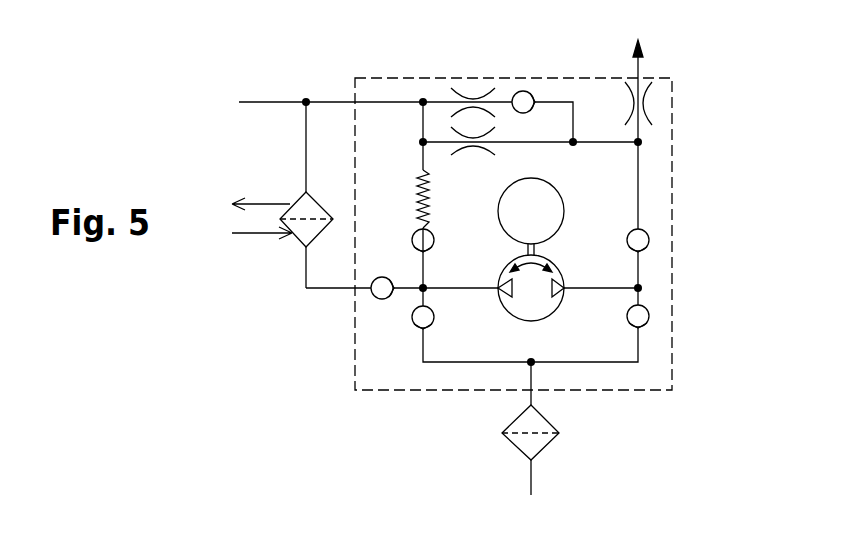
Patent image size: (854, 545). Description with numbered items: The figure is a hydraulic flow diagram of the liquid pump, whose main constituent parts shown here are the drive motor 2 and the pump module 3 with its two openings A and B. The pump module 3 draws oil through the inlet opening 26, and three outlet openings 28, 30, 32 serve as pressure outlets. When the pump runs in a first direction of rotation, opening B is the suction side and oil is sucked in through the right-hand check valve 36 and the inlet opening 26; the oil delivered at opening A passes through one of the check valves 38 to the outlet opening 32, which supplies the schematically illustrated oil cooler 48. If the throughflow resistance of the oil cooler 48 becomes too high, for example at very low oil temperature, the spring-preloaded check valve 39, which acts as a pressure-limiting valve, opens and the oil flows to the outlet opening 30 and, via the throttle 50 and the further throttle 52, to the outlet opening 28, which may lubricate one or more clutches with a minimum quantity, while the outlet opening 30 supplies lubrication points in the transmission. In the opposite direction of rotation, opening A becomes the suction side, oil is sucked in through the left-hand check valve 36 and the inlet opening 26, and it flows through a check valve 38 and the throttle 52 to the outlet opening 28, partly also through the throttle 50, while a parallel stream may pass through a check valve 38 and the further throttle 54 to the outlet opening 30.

The drive motor 2 is at (565, 210).
The pump module 3 is at (562, 276).
The inlet opening 26 is at (532, 398).
The outlet opening 28 is at (641, 57).
The outlet opening 30 is at (347, 100).
The outlet opening 32 is at (332, 288).
The valve element 36 is at (420, 318).
The valve element 38 is at (528, 100).
The valve element 39 is at (418, 238).
The oil cooler 48 is at (303, 230).
The throttle 50 is at (483, 148).
The throttle 52 is at (645, 115).
The throttle 54 is at (472, 92).